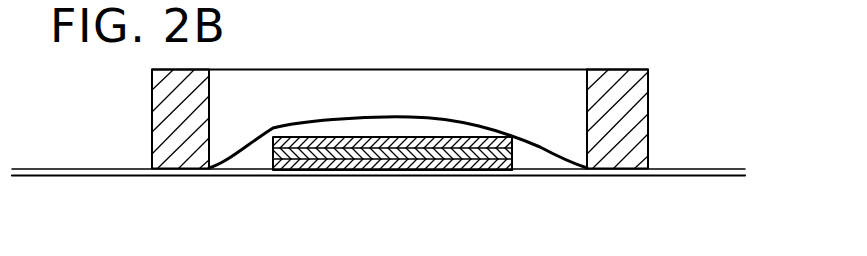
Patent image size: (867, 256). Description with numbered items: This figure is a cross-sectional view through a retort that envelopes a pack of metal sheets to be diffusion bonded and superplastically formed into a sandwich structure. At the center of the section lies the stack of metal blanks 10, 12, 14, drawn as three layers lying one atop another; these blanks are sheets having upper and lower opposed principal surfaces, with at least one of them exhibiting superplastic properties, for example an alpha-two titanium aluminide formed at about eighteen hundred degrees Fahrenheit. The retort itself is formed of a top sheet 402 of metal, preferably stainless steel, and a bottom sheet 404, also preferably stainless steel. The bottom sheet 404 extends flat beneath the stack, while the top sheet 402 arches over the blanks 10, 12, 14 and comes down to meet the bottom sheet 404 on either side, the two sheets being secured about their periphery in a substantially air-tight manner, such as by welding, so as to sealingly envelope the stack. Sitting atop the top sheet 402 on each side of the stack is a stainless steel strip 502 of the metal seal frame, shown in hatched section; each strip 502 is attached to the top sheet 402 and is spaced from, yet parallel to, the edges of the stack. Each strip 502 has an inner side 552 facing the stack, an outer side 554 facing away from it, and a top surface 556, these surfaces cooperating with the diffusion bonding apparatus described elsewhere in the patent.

The metal blank 10 is at (273, 166).
The metal blank 12 is at (270, 153).
The metal blank 14 is at (515, 143).
The top sheet 402 is at (397, 117).
The bottom sheet 404 is at (422, 178).
The stainless steel strip 502 is at (157, 112).
The inner side 552 is at (587, 92).
The outer side 554 is at (648, 113).
The top surface 556 is at (607, 70).